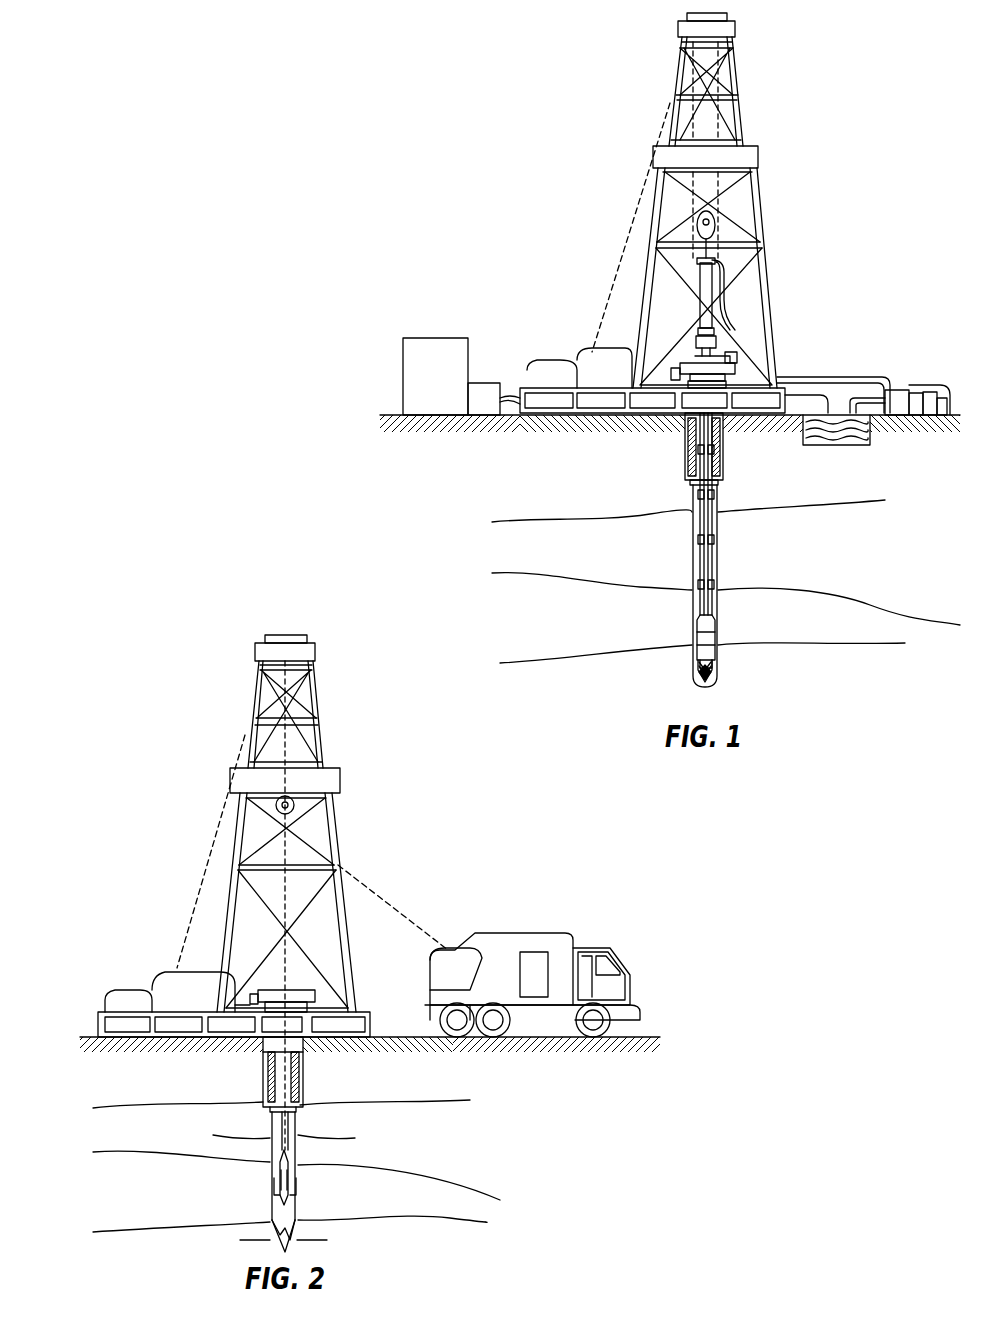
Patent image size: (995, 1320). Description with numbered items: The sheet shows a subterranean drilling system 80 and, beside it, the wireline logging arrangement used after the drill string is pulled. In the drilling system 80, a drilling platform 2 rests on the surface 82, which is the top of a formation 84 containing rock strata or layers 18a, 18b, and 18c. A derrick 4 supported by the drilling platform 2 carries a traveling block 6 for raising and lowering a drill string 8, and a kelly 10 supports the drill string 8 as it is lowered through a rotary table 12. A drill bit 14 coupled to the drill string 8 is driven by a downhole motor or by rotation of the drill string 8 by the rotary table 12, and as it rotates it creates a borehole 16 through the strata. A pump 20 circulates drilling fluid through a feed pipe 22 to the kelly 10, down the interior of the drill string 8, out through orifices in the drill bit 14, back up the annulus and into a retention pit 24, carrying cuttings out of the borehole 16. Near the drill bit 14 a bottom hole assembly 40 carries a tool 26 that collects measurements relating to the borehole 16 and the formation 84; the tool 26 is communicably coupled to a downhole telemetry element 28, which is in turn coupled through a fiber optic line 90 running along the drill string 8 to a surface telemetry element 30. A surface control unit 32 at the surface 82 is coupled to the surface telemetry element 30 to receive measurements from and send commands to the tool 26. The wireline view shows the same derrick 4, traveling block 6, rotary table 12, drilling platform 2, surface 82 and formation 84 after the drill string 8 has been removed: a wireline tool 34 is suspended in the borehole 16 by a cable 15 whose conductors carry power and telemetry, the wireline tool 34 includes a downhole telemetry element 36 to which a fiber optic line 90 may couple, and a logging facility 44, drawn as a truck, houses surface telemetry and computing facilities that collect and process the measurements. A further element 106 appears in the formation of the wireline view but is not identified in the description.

In FIG. 1, the drilling platform 2 is at (522, 396).
In FIG. 2, the drilling platform 2 is at (362, 1030).
In FIG. 1, the derrick 4 is at (735, 92).
In FIG. 2, the derrick 4 is at (345, 948).
In FIG. 1, the traveling block 6 is at (713, 228).
In FIG. 2, the traveling block 6 is at (290, 800).
In FIG. 1, the drill string 8 is at (712, 520).
In FIG. 1, the kelly 10 is at (708, 305).
In FIG. 1, the rotary table 12 is at (722, 368).
In FIG. 2, the rotary table 12 is at (312, 996).
In FIG. 1, the drill bit 14 is at (705, 682).
In FIG. 2, the cable 15 is at (278, 1092).
In FIG. 1, the borehole 16 is at (718, 540).
In FIG. 2, the borehole 16 is at (300, 1120).
In FIG. 1, the rock stratum or layer 18a is at (538, 612).
In FIG. 2, the rock stratum or layer 18a is at (468, 1087).
In FIG. 1, the rock stratum or layer 18b is at (538, 552).
In FIG. 2, the rock stratum or layer 18b is at (133, 1142).
In FIG. 1, the rock stratum or layer 18c is at (872, 490).
In FIG. 2, the rock stratum or layer 18c is at (131, 1216).
In FIG. 1, the pump 20 is at (898, 392).
In FIG. 1, the feed pipe 22 is at (832, 378).
In FIG. 1, the retention pit 24 is at (800, 440).
In FIG. 1, the tool 26 is at (705, 640).
In FIG. 1, the downhole telemetry element 28 is at (705, 630).
In FIG. 2, the downhole telemetry element 28 is at (285, 1182).
In FIG. 1, the surface telemetry element 30 is at (498, 410).
In FIG. 1, the surface control unit 32 is at (452, 388).
In FIG. 2, the wireline tool 34 is at (282, 1158).
In FIG. 2, the downhole telemetry element 36 is at (278, 1185).
In FIG. 1, the bottom hole assembly 40 is at (720, 605).
In FIG. 2, the logging facility 44 is at (512, 933).
In FIG. 1, the drilling system 80 is at (777, 124).
In FIG. 1, the surface 82 is at (393, 415).
In FIG. 2, the surface 82 is at (92, 1037).
In FIG. 1, the formation 84 is at (462, 464).
In FIG. 2, the formation 84 is at (565, 1100).
In FIG. 1, the fiber optic line 90 is at (697, 430).
In FIG. 2, the fiber optic line 90 is at (283, 1060).
In FIG. 2, the formation bed 106 is at (345, 1138).